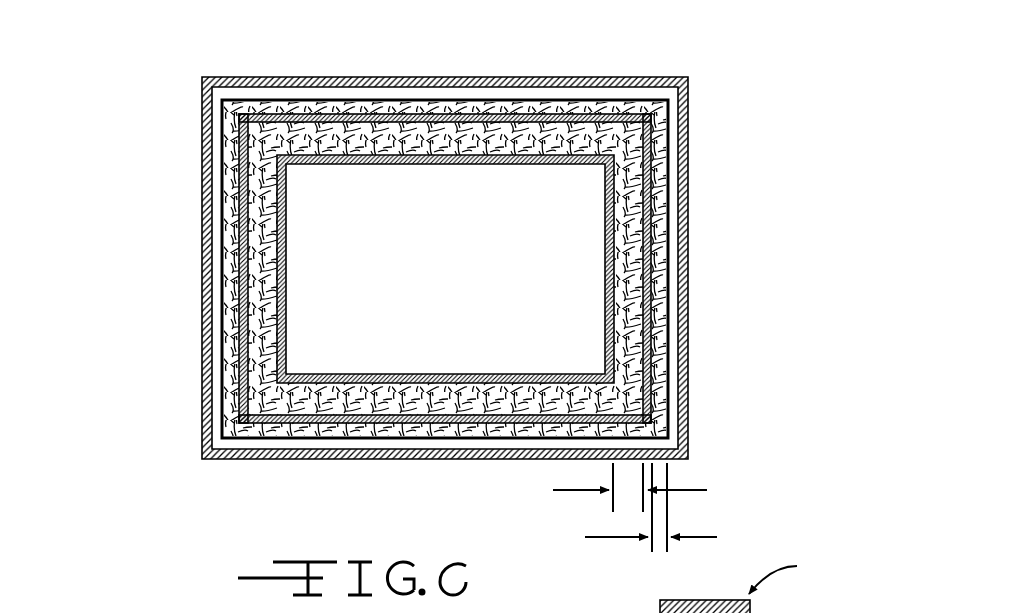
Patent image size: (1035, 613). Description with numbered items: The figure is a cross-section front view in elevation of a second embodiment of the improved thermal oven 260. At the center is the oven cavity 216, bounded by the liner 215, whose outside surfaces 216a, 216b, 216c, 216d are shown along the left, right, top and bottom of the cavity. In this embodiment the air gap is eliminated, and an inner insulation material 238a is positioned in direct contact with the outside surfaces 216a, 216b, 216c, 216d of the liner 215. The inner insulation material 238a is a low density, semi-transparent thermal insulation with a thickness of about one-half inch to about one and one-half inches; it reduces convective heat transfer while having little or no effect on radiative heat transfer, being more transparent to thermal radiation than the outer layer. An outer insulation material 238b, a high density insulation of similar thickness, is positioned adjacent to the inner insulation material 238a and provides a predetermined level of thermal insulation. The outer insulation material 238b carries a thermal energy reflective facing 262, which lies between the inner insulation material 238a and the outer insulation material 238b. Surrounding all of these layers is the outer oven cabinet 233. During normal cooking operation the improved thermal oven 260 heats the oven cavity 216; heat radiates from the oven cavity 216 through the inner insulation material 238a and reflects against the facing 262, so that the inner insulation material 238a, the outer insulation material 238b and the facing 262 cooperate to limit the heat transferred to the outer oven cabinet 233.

The improved thermal oven 260 is at (722, 72).
The outer oven cabinet 233 is at (690, 137).
The thermal energy reflective facing 262 is at (655, 395).
The inner insulation material 238a is at (308, 138).
The outer insulation material 238b is at (513, 100).
The oven cavity 216 is at (445, 268).
The outside surface of the liner 216a is at (275, 297).
The outside surface of the liner 216b is at (647, 217).
The outside surface of the liner 216c is at (373, 152).
The outside surface of the liner 216d is at (385, 418).
The liner 215 is at (463, 167).